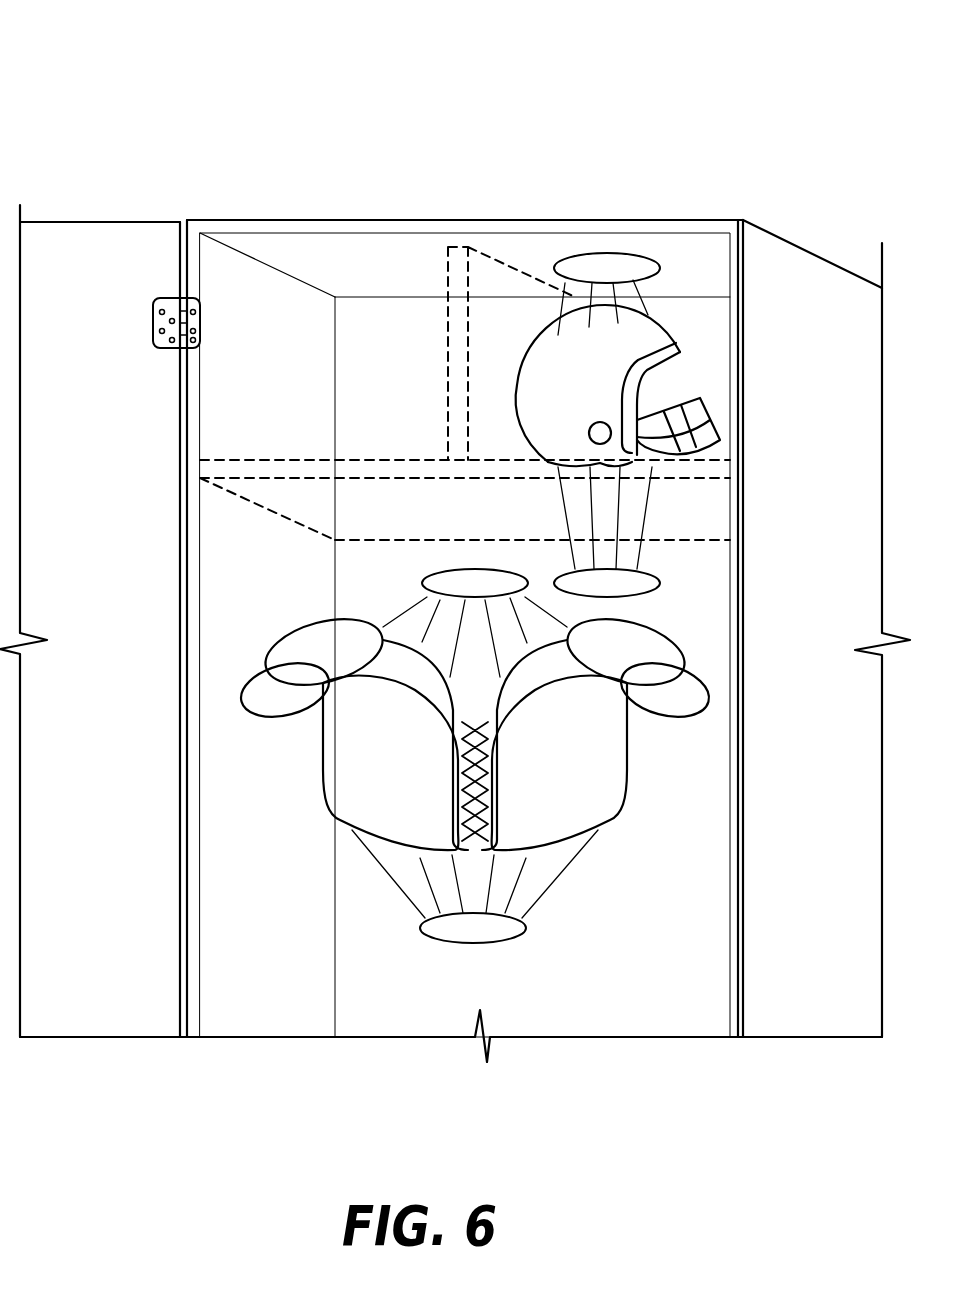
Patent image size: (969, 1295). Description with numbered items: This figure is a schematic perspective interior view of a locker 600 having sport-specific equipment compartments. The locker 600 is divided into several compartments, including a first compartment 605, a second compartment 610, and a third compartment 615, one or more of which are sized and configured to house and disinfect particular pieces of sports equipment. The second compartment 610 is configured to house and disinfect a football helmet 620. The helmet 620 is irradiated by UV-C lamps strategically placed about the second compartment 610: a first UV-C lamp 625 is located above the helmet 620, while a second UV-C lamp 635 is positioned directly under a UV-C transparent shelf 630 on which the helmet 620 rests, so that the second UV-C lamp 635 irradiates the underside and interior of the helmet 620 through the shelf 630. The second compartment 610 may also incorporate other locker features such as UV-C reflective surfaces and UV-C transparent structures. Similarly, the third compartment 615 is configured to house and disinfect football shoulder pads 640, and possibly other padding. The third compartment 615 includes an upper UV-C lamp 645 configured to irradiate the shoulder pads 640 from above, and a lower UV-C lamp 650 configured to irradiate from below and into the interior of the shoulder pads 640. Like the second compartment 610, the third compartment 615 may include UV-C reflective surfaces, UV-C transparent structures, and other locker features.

The locker 600 is at (124, 107).
The first compartment 605 is at (352, 258).
The second compartment 610 is at (705, 250).
The third compartment 615 is at (697, 823).
The football helmet 620 is at (553, 356).
The first UV-C lamp 625 is at (603, 256).
The UV-C transparent shelf 630 is at (708, 518).
The second UV-C lamp 635 is at (652, 586).
The football shoulder pads 640 is at (357, 780).
The upper UV-C lamp 645 is at (432, 581).
The lower UV-C lamp 650 is at (513, 935).